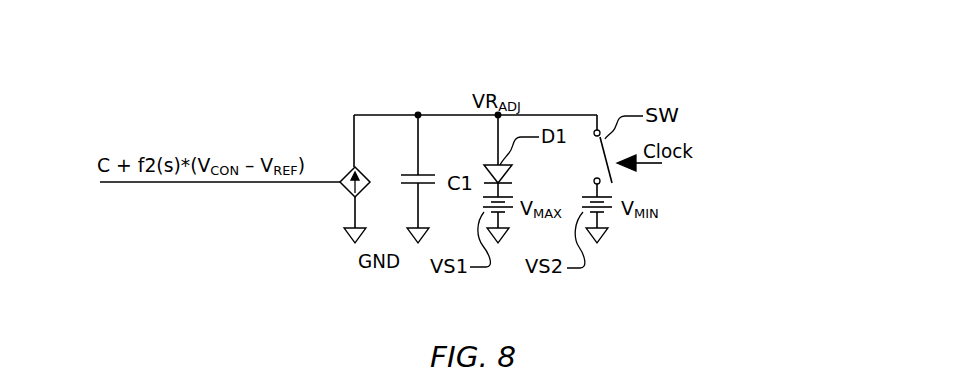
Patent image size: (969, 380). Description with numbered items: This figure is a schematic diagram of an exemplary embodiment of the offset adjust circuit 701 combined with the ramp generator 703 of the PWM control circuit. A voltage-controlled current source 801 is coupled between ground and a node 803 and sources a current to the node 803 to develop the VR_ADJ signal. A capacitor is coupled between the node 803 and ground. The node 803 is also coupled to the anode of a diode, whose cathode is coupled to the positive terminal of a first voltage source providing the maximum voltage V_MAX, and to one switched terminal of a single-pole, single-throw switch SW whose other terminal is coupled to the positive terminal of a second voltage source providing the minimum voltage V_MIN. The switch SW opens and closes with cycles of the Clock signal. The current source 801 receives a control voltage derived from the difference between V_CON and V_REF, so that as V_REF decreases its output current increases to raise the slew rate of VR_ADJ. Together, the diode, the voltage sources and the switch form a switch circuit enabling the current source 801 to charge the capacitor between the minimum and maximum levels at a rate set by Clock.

The offset adjust circuit 701 is at (241, 112).
The ramp generator 703 is at (362, 86).
The voltage-controlled current source 801 is at (343, 193).
The node 803 is at (418, 115).